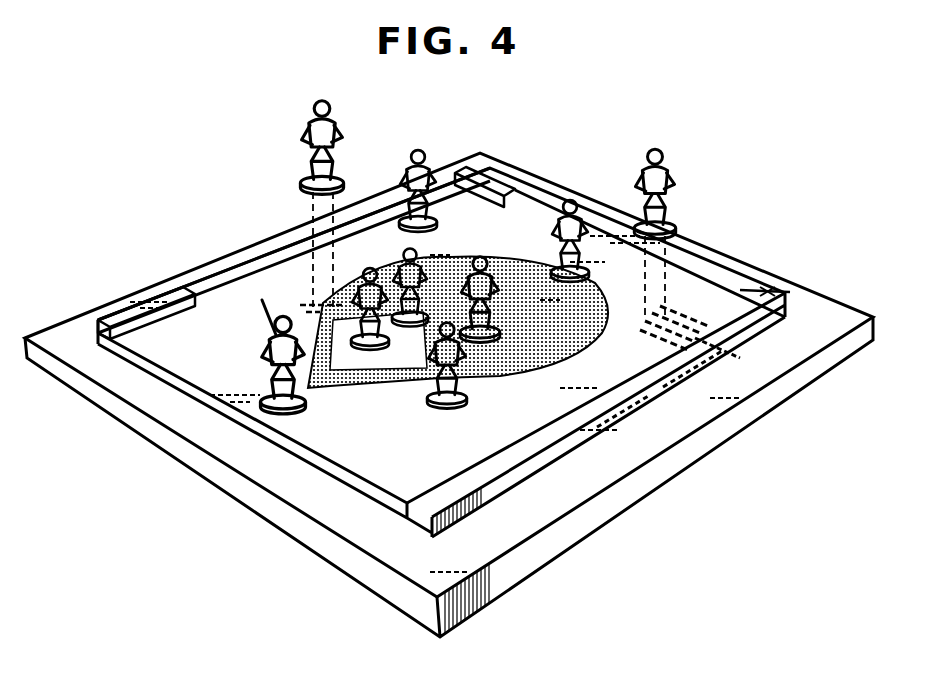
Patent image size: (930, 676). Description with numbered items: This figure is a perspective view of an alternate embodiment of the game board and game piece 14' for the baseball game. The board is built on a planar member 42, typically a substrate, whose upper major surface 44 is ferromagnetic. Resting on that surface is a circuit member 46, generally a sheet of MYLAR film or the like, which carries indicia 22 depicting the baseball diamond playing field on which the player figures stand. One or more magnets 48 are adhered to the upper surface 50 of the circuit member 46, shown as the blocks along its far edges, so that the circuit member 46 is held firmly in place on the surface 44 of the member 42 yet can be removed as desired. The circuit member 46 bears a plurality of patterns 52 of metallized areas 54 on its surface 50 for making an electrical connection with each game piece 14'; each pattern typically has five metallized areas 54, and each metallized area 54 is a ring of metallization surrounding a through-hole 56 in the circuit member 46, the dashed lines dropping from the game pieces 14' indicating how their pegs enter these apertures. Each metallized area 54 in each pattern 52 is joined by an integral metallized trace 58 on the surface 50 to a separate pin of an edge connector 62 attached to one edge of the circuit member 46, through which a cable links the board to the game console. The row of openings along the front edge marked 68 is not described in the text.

The game piece 14' is at (484, 257).
The indicia 22 is at (368, 383).
The planar member 42 is at (640, 478).
The upper major surface 44 is at (823, 300).
The circuit member 46 is at (230, 452).
The magnets 48 is at (148, 300).
The upper surface 50 is at (285, 255).
The patterns 52 is at (680, 305).
The metallized areas 54 is at (650, 318).
The through-hole 56 is at (650, 332).
The metallized trace 58 is at (716, 326).
The edge connector 62 is at (767, 290).
The row of holes 68 is at (690, 366).